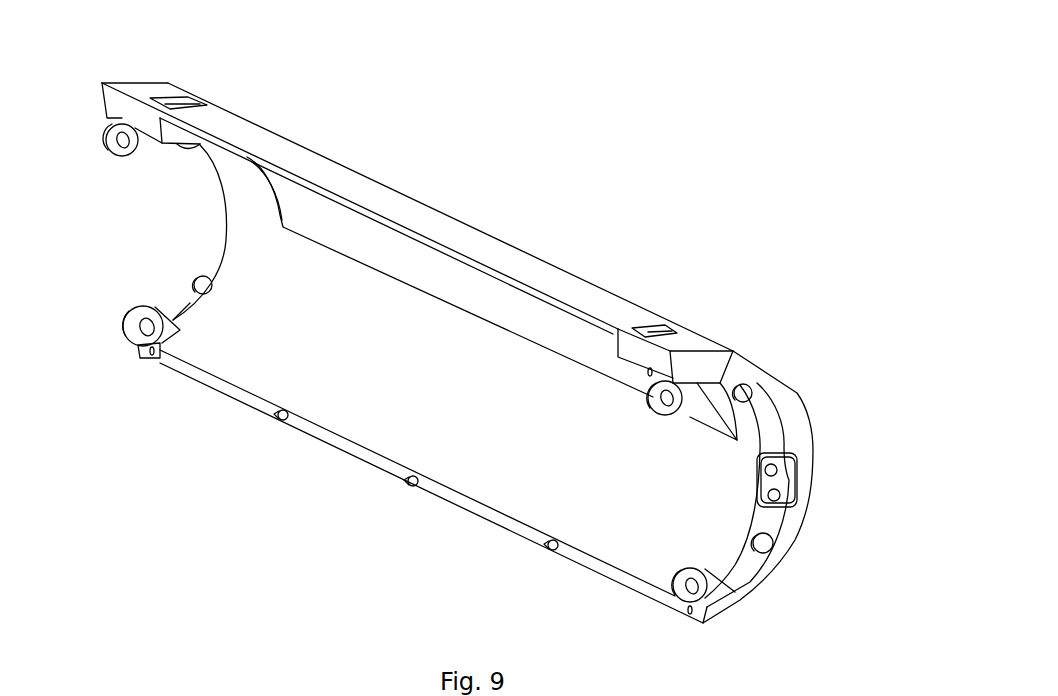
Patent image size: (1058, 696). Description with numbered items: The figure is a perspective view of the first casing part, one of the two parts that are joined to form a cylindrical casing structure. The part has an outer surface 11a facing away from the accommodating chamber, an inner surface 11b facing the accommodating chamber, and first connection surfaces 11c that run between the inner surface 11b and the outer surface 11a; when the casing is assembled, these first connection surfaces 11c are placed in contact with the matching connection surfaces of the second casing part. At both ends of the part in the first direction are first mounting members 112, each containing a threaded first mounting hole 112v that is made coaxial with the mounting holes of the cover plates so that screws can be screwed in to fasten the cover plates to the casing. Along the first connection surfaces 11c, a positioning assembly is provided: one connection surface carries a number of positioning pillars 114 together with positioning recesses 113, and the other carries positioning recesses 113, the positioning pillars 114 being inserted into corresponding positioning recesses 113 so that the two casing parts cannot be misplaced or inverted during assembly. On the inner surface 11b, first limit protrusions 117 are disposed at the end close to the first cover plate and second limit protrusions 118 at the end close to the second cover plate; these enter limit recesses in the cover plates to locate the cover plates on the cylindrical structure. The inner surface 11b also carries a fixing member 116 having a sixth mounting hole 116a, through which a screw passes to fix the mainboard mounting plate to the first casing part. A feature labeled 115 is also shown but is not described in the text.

The outer surface 11a is at (487, 247).
The inner surface 11b is at (717, 540).
The first connection surface 11c is at (600, 563).
The first mounting member 112 is at (165, 340).
The first mounting hole 112v is at (143, 327).
The positioning recess 113 is at (118, 118).
The positioning pillar 114 is at (547, 550).
The slot 115 is at (210, 103).
The fixing member 116 is at (743, 397).
The sixth mounting hole 116a is at (775, 497).
The first limit protrusion 117 is at (768, 547).
The second limit protrusion 118 is at (195, 278).